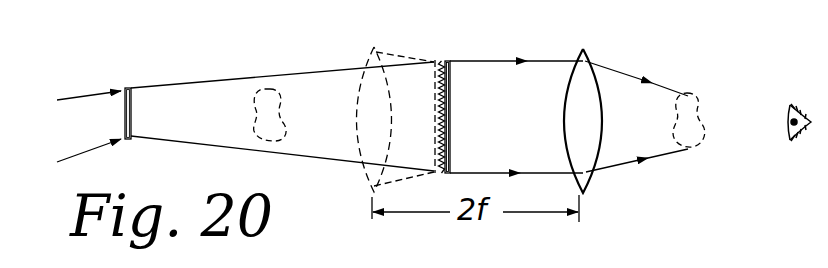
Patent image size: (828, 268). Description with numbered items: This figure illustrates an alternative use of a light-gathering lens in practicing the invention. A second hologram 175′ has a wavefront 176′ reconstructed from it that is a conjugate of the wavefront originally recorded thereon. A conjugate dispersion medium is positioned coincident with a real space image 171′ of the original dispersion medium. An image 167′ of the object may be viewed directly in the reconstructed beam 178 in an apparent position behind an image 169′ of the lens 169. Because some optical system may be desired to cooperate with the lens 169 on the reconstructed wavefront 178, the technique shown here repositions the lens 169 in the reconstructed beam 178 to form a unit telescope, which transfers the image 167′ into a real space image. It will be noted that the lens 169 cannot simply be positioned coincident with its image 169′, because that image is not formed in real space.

The second hologram 175′ is at (127, 86).
The wavefront 176′ is at (282, 123).
The image of the object 167′ is at (274, 90).
The image of the lens 169′ is at (394, 36).
The real space image of the dispersion medium 171′ is at (437, 60).
The reconstructed beam 178 is at (492, 172).
The lens 169 is at (585, 60).